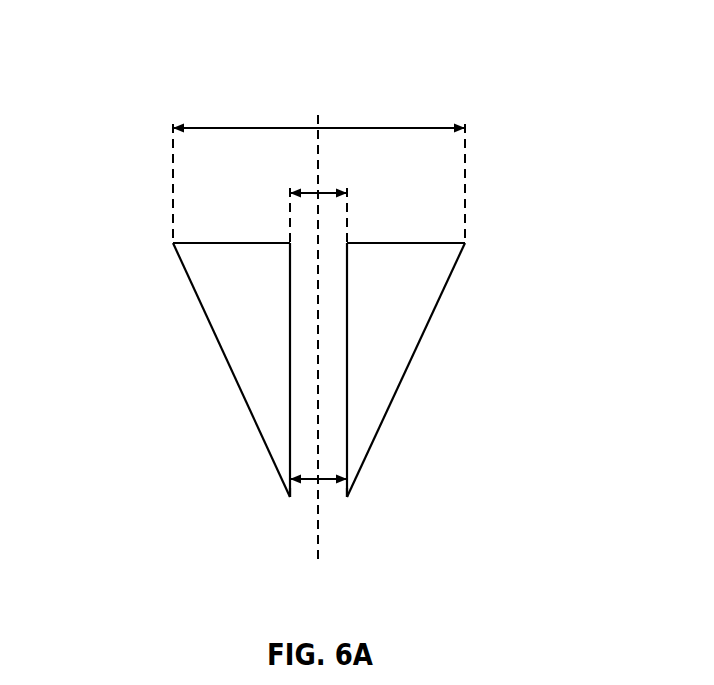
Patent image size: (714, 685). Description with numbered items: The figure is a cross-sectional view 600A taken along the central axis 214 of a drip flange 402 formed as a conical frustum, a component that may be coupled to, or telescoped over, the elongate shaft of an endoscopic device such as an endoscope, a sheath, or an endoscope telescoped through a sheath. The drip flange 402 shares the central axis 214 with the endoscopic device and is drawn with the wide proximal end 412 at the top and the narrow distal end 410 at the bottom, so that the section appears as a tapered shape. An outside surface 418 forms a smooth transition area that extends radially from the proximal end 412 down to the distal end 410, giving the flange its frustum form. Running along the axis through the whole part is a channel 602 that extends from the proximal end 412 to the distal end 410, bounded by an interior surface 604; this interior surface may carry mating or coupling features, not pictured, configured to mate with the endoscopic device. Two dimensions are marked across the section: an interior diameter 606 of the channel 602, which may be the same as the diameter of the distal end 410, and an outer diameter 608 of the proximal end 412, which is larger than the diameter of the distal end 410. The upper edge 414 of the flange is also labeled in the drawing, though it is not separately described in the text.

The cross-sectional view 600A is at (176, 60).
The central axis 214 is at (319, 553).
The drip flange 402 is at (440, 376).
The distal end 410 is at (298, 503).
The proximal end 412 is at (357, 243).
The inlet end / upper edge 414 is at (472, 236).
The outside surface 418 is at (233, 317).
The channel 602 is at (306, 290).
The interior surface 604 is at (292, 347).
The interior diameter 606 is at (305, 192).
The outer diameter 608 is at (287, 127).